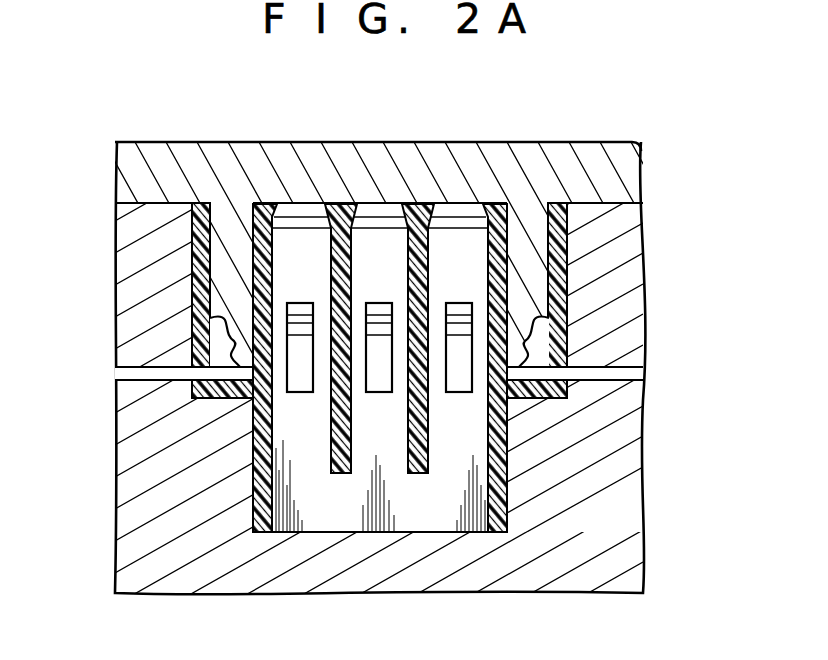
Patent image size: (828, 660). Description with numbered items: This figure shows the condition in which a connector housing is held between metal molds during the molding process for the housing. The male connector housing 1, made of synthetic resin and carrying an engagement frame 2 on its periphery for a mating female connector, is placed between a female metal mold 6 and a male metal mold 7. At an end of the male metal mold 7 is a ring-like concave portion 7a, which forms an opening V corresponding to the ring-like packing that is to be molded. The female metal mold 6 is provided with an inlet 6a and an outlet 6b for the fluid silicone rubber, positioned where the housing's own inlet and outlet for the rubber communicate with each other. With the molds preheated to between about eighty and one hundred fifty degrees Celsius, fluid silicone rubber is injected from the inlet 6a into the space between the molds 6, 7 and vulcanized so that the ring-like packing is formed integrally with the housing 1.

The male connector housing 1 is at (412, 204).
The engagement frame 2 is at (192, 273).
The female metal mold 6 is at (620, 249).
The inlet 6a is at (123, 372).
The outlet pipe 6b is at (608, 377).
The male metal mold 7 is at (551, 153).
The ring-like concave portion 7a is at (552, 333).
The opening V is at (540, 347).